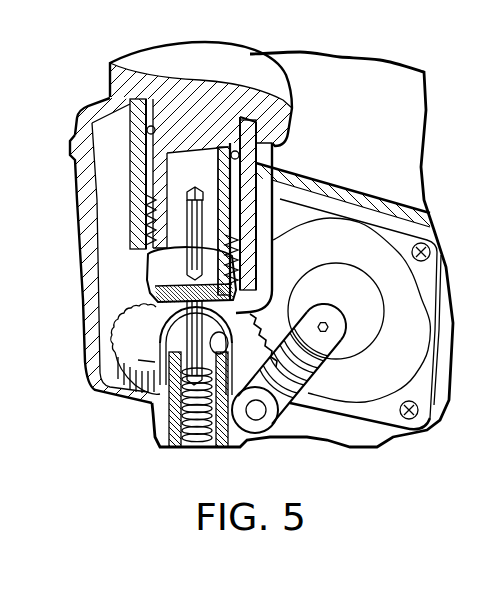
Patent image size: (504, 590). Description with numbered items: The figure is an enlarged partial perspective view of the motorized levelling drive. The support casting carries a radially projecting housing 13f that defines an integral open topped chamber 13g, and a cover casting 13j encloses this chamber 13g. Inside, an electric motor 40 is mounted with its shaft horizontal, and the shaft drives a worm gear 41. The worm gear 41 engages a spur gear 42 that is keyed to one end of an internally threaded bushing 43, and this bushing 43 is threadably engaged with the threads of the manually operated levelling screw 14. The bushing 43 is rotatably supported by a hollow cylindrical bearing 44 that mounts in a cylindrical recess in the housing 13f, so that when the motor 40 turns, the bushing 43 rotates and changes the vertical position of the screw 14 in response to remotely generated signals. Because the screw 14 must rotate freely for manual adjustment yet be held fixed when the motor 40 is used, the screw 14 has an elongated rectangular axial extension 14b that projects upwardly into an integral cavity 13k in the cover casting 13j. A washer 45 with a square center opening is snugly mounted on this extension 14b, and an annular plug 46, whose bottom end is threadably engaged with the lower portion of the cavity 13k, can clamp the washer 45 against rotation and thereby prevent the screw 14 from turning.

The cover casting 13j is at (78, 116).
The radially projecting housing 13f is at (80, 200).
The integral open topped chamber 13g is at (107, 205).
The integral cavity 13k is at (232, 190).
The manually operated levelling screw 14 is at (200, 437).
The elongated rectangular axial extension 14b is at (192, 190).
The electric motor 40 is at (433, 323).
The worm gear 41 is at (295, 390).
The spur gear 42 is at (118, 377).
The internally threaded bushing 43 is at (212, 337).
The hollow cylindrical bearing 44 is at (213, 446).
The washer 45 is at (163, 270).
The annular plug 46 is at (196, 65).